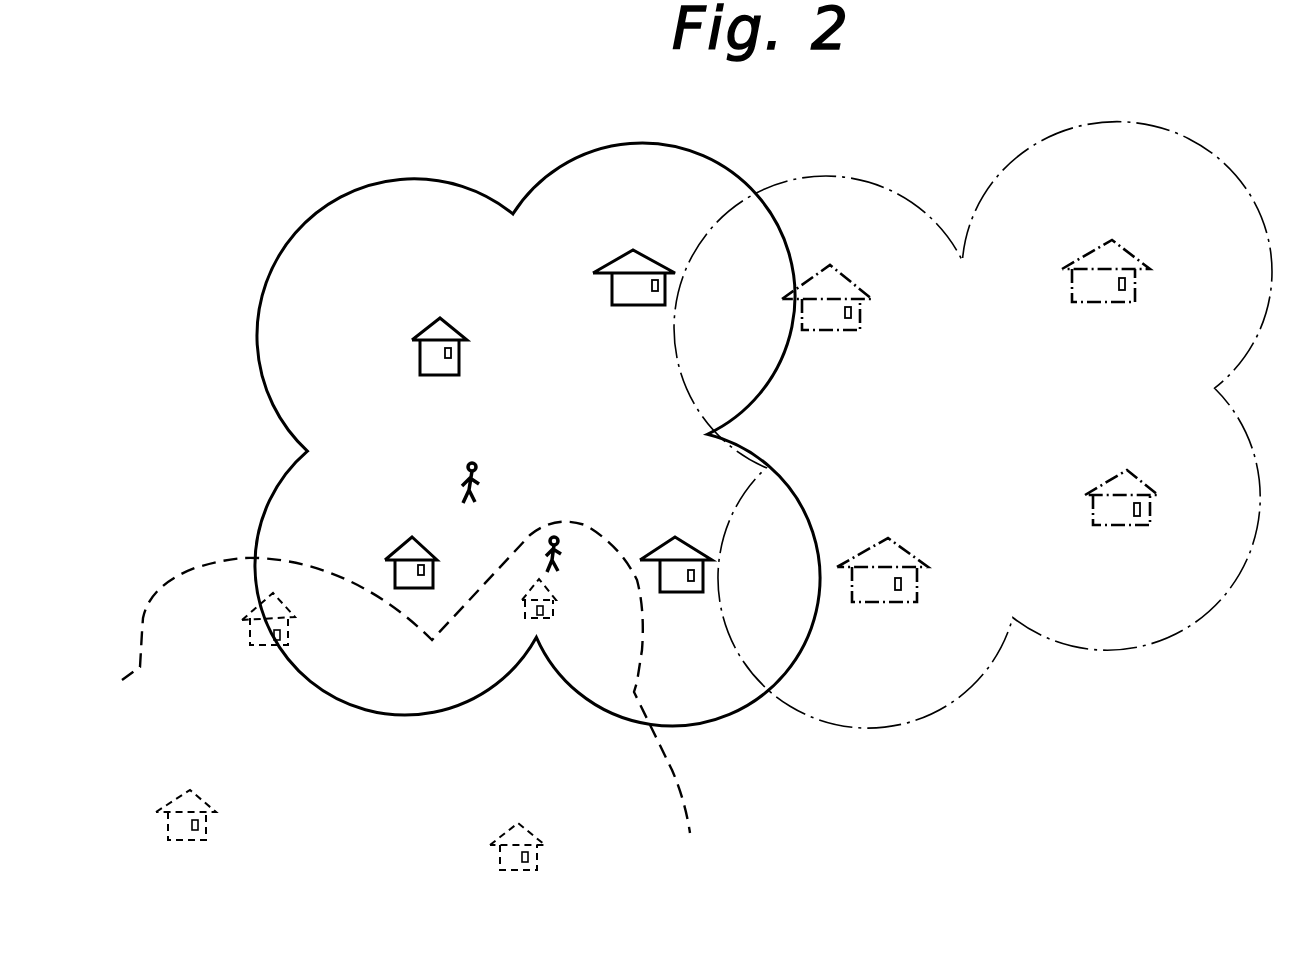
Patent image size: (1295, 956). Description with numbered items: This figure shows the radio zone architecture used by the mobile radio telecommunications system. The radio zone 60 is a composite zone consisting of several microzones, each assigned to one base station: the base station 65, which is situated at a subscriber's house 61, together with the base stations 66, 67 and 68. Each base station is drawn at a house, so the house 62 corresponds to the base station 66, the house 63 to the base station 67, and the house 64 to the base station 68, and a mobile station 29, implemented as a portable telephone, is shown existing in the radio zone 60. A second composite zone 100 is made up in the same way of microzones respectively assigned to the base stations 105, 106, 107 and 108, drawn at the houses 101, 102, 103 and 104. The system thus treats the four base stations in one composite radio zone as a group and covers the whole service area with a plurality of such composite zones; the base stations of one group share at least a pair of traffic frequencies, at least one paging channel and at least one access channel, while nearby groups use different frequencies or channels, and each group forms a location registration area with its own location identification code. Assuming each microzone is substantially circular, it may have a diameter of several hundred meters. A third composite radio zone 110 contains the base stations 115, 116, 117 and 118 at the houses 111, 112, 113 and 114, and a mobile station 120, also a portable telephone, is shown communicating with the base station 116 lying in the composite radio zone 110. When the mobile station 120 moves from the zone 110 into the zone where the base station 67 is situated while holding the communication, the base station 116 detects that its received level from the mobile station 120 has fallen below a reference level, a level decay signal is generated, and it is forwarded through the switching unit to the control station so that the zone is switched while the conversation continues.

The mobile station 29 is at (478, 470).
The radio zone 60 is at (379, 180).
The subscriber's house 61 is at (470, 325).
The subscriber home 62 is at (660, 257).
The subscriber home 63 is at (445, 586).
The subscriber home 64 is at (712, 536).
The base station 65 is at (452, 352).
The base station 66 is at (660, 286).
The base station 67 is at (424, 570).
The base station 68 is at (695, 575).
The composite zone 100 is at (855, 178).
The subscriber home 101 is at (871, 281).
The subscriber home 102 is at (1146, 246).
The subscriber home 103 is at (924, 543).
The subscriber home 104 is at (1166, 470).
The base station 105 is at (853, 313).
The base station 106 is at (1127, 285).
The base station 107 is at (903, 583).
The base station 108 is at (1142, 510).
The composite radio zone 110 is at (195, 572).
The subscriber home 111 is at (301, 629).
The subscriber home 112 is at (572, 625).
The subscriber home 113 is at (218, 808).
The subscriber home 114 is at (550, 824).
The fixed subscriber unit 115 is at (282, 633).
The base station 116 is at (545, 612).
The fixed subscriber unit 117 is at (200, 825).
The fixed subscriber unit 118 is at (530, 857).
The mobile station 120 is at (562, 546).